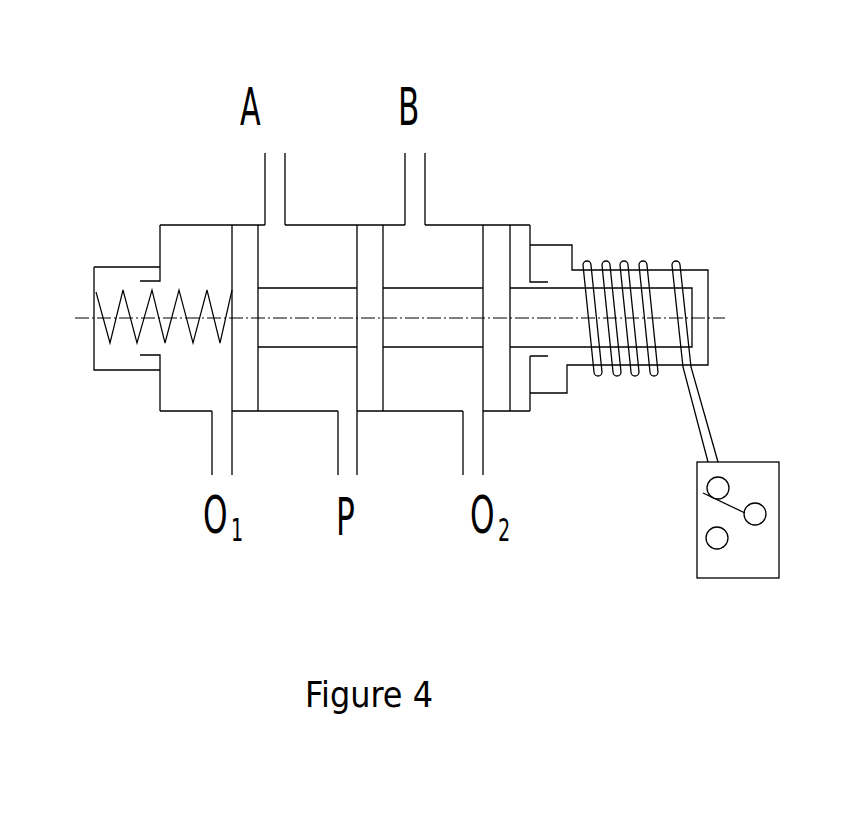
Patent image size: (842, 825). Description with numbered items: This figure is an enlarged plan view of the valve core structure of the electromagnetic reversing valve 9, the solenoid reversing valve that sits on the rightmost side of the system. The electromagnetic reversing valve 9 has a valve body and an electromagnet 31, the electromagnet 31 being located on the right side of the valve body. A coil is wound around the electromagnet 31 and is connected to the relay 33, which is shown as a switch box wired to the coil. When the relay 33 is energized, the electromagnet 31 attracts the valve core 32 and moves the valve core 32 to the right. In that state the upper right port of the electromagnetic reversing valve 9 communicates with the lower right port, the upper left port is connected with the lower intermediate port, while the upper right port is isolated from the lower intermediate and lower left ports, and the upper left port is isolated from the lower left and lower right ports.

The electromagnetic reversing valve 9 is at (158, 223).
The electromagnet 31 is at (630, 267).
The valve core 32 is at (501, 247).
The relay 33 is at (742, 570).